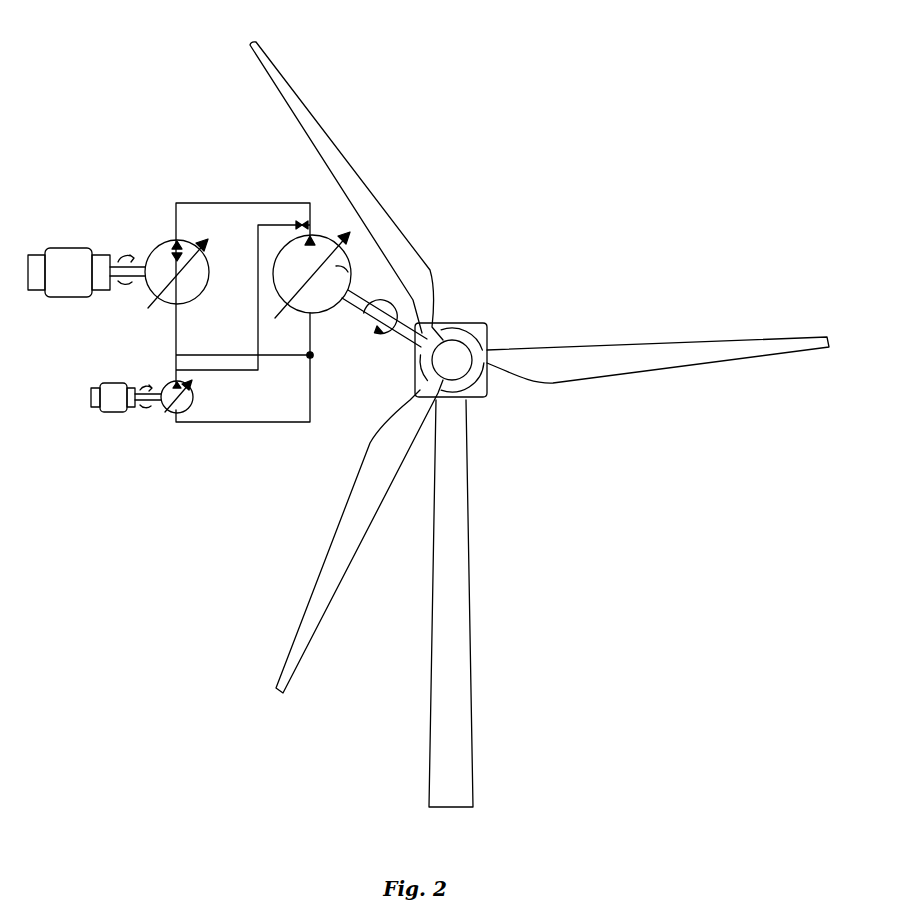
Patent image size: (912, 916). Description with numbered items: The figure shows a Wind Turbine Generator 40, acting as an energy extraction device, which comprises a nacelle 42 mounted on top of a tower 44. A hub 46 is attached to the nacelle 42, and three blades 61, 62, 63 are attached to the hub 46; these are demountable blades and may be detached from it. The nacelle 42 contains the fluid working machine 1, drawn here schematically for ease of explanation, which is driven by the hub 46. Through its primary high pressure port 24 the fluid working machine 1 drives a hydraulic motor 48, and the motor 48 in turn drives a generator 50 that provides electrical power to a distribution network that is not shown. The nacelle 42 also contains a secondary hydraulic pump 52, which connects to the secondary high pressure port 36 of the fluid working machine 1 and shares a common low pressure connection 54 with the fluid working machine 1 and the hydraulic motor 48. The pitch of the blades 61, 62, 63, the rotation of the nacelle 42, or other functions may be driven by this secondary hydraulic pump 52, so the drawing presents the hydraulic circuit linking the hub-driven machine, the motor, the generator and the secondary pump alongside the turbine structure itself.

The fluid working machine 1 is at (365, 245).
The primary high pressure port 24 is at (310, 215).
The secondary high pressure port 36 is at (283, 227).
The Wind Turbine Generator 40 is at (627, 128).
The nacelle 42 is at (480, 397).
The tower 44 is at (451, 603).
The hub 46 is at (457, 357).
The hydraulic motor 48 is at (165, 262).
The generator 50 is at (70, 280).
The secondary hydraulic pump 52 is at (190, 404).
The common low pressure connection 54 is at (311, 355).
The blade 61 is at (280, 672).
The blade 62 is at (283, 80).
The blade 63 is at (698, 353).